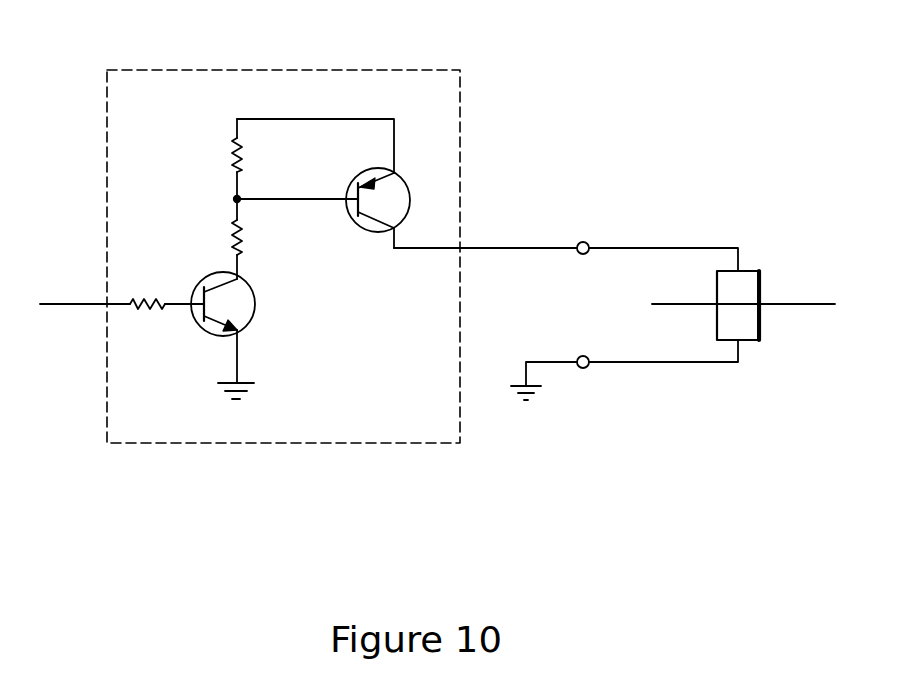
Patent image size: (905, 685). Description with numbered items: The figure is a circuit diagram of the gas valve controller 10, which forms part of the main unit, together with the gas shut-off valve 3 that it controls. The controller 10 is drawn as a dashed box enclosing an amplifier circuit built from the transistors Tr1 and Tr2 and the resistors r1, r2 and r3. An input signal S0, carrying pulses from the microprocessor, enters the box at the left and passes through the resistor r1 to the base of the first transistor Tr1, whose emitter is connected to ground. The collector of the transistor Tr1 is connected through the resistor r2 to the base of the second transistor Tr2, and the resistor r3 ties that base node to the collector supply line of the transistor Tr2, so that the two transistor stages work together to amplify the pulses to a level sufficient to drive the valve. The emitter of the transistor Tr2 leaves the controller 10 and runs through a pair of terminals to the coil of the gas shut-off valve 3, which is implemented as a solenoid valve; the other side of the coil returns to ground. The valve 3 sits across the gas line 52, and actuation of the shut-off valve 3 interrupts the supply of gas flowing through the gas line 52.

The gas valve controller 10 is at (240, 235).
The gas shut-off valve 3 is at (762, 325).
The gas line 52 is at (805, 304).
The input signal S0 is at (72, 303).
The resistor r1 is at (167, 290).
The resistor r2 is at (218, 227).
The resistor r3 is at (217, 161).
The transistor Tr1 is at (240, 327).
The transistor Tr2 is at (370, 220).